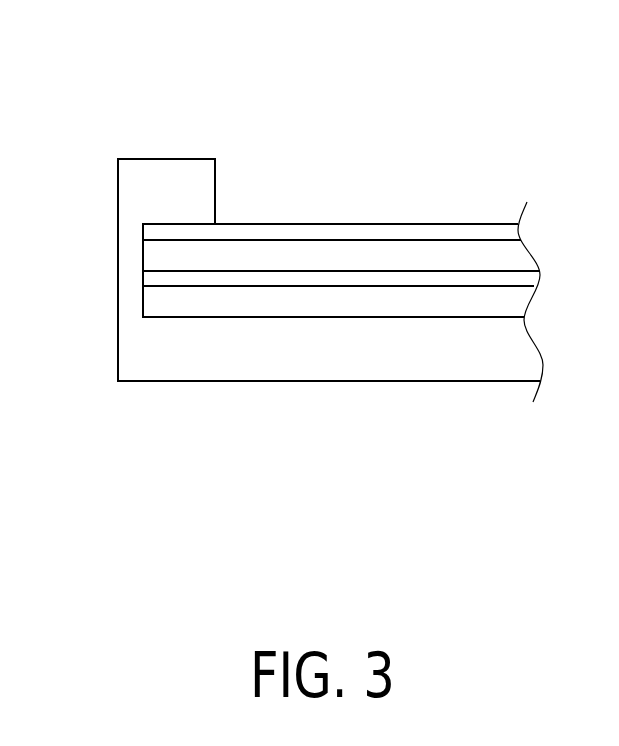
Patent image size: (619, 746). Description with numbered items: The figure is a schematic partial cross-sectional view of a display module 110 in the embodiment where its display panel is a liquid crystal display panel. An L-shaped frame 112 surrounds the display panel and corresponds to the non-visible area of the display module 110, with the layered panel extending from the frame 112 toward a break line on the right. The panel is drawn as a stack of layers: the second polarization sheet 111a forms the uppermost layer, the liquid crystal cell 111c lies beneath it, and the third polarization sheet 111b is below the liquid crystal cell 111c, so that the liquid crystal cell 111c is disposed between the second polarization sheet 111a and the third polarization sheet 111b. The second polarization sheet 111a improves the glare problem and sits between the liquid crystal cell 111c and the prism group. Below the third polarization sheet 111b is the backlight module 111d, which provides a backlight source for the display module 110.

The display module 110 is at (158, 113).
The second polarization sheet 111a is at (358, 234).
The third polarization sheet 111b is at (447, 275).
The liquid crystal cell 111c is at (457, 257).
The backlight module 111d is at (329, 303).
The frame 112 is at (163, 358).